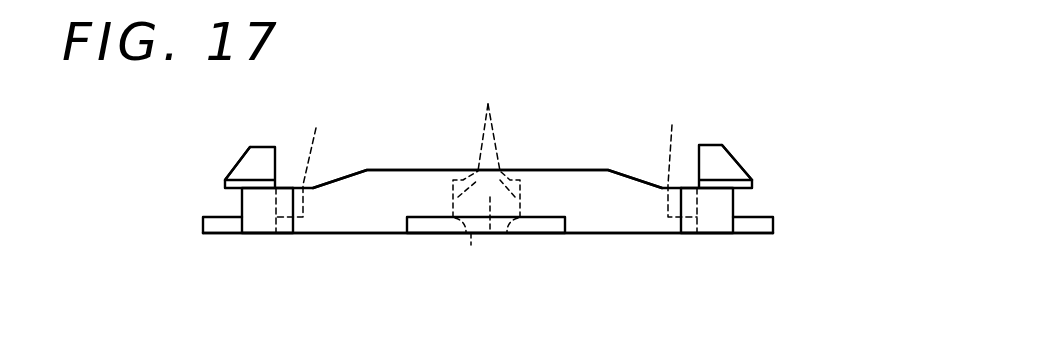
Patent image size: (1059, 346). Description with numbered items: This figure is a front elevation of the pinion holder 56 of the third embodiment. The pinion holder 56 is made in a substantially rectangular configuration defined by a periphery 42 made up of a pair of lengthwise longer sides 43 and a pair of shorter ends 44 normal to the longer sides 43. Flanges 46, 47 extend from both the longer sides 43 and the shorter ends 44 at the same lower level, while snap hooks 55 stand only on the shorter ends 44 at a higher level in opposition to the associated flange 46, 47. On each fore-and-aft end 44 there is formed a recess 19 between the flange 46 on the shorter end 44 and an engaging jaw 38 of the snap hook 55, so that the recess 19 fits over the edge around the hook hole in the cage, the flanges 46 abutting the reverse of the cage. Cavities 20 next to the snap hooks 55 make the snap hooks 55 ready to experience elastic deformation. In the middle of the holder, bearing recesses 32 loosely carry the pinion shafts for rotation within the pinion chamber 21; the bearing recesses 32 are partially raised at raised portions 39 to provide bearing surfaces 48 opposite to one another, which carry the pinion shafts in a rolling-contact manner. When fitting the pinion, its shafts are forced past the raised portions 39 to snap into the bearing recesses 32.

The recess 19 is at (240, 207).
The cavity 20 is at (486, 155).
The pinion chamber 21 is at (490, 233).
The bearing recess 32 is at (490, 121).
The engaging jaw 38 is at (225, 180).
The raised portion 39 is at (458, 178).
The periphery 42 is at (503, 231).
The longer side 43 is at (609, 210).
The shorter end 44 is at (240, 203).
The flange 46 is at (224, 228).
The flange 47 is at (425, 225).
The bearing surface 48 is at (471, 245).
The snap hook 55 is at (253, 167).
The pinion holder 56 is at (577, 159).